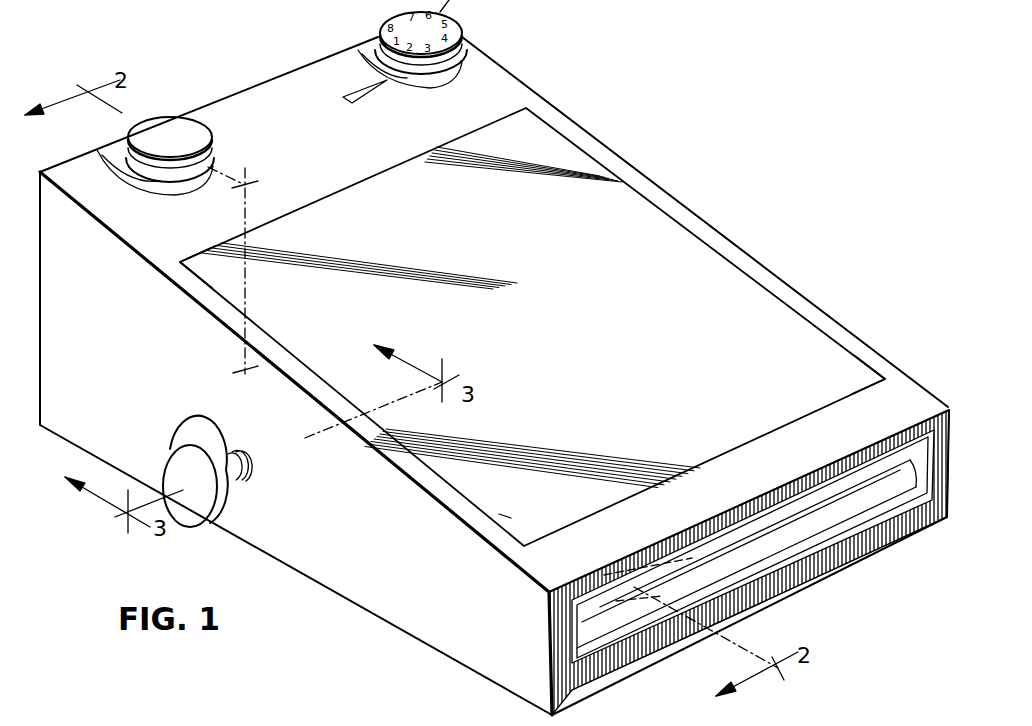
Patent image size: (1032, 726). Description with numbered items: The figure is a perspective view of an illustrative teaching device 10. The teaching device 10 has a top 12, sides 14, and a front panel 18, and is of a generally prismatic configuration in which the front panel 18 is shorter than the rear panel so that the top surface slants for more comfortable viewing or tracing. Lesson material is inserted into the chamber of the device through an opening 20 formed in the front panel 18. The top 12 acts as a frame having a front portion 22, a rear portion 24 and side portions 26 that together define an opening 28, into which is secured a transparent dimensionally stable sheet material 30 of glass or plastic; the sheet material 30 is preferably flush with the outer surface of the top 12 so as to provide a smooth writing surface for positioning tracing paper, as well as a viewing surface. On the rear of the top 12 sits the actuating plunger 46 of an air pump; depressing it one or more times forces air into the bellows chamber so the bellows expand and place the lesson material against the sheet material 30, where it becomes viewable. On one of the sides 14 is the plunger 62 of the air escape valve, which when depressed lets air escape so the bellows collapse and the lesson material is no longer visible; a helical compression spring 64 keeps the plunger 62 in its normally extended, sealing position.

The teaching device 10 is at (577, 109).
The top 12 is at (317, 70).
The sides 14 is at (360, 600).
The front panel 18 is at (627, 665).
The opening 20 is at (836, 528).
The front portion 22 is at (885, 405).
The rear portion 24 is at (282, 88).
The side portions 26 is at (669, 197).
The opening 28 is at (213, 249).
The transparent dimensionally stable sheet material 30 is at (703, 260).
The actuating plunger 46 is at (181, 124).
The plunger 62 is at (183, 465).
The helical compression spring 64 is at (247, 481).